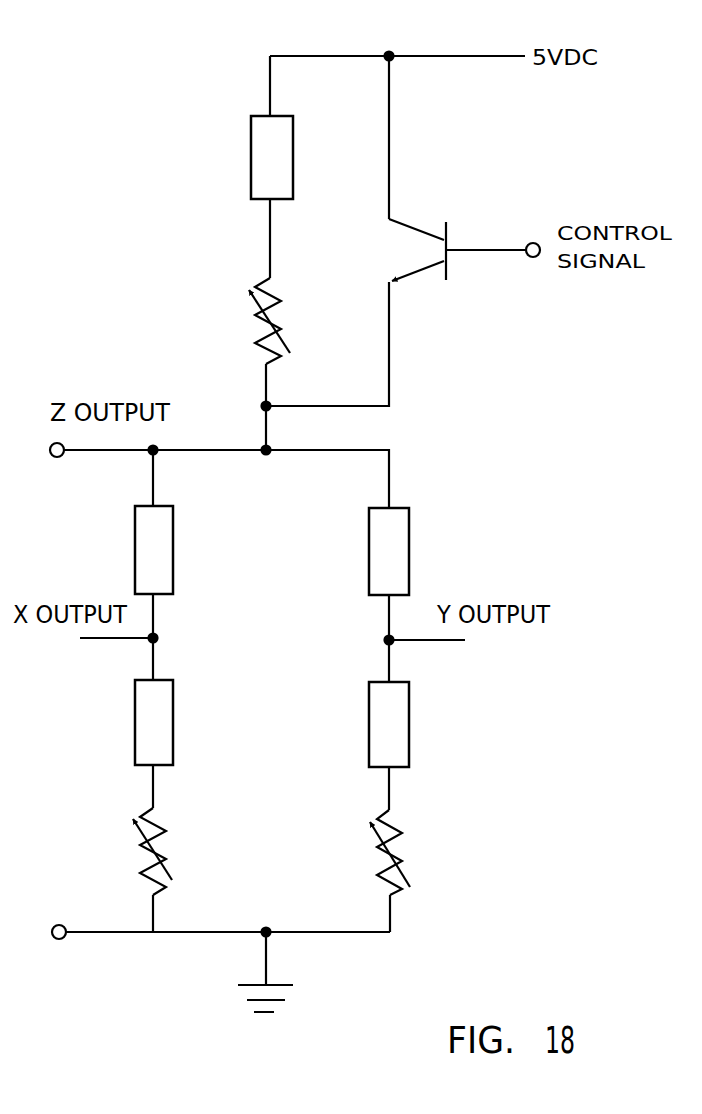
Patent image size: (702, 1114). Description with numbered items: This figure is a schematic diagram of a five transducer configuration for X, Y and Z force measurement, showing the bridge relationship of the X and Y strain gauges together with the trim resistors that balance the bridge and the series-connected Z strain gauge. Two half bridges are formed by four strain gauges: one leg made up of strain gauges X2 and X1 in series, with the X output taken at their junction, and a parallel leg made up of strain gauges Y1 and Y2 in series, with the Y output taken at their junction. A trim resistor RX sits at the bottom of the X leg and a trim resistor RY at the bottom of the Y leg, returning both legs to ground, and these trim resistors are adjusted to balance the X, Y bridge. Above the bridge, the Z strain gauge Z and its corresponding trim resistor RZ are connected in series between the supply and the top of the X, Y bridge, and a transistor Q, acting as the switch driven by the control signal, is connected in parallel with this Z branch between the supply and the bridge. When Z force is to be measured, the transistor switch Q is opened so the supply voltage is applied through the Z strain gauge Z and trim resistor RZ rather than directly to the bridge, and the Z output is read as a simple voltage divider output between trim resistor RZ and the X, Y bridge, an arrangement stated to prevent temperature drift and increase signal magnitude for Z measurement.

The Z strain gauge Z is at (250, 157).
The trim resistor Rz RZ is at (243, 321).
The control transistor Q is at (464, 250).
The resistor X2 is at (180, 550).
The resistor X1 is at (174, 722).
The trim resistor Rx RX is at (183, 851).
The resistor Y1 is at (422, 551).
The resistor Y2 is at (408, 724).
The trim resistor Ry RY is at (419, 852).